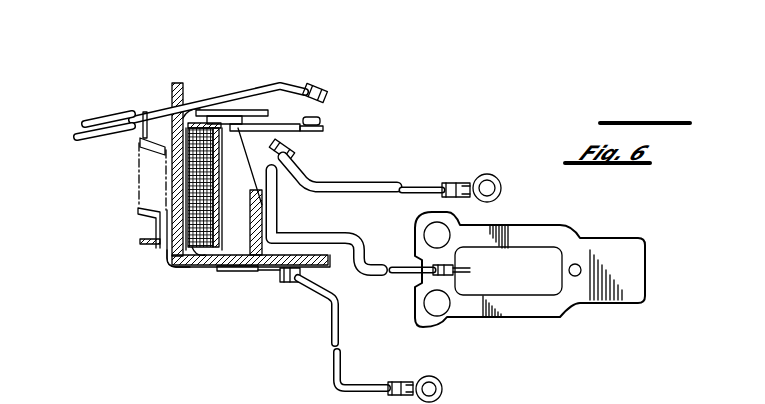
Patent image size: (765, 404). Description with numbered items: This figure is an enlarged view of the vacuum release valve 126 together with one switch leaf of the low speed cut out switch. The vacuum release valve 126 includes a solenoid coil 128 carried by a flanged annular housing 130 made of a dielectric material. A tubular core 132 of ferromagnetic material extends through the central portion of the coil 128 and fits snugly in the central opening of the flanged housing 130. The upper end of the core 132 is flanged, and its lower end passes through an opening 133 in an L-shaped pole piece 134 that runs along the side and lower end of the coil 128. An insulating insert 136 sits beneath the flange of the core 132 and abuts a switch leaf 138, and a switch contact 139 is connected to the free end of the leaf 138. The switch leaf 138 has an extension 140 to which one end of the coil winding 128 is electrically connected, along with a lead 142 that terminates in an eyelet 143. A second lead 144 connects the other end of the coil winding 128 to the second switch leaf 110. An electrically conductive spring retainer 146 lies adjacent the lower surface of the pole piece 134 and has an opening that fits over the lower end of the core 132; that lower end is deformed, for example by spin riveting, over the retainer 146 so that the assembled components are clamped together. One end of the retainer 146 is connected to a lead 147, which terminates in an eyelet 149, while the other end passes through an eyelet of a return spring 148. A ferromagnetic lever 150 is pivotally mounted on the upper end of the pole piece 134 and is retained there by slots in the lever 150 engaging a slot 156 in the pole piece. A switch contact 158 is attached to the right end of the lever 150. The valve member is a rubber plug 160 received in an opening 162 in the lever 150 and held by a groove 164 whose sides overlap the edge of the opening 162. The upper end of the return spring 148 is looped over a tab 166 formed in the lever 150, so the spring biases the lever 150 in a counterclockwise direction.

The second switch leaf 110 is at (541, 224).
The vacuum release valve 126 is at (192, 306).
The solenoid coil 128 is at (197, 245).
The flanged annular housing 130 is at (233, 270).
The tubular core 132 is at (262, 123).
The opening 133 is at (240, 273).
The L-shaped pole piece 134 is at (172, 252).
The insulating insert 136 is at (204, 109).
The switch leaf 138 is at (318, 118).
The switch contact 139 is at (323, 129).
The extension 140 is at (270, 146).
The lead 142 is at (375, 184).
The eyelet 143 is at (488, 174).
The lead 144 is at (360, 240).
The spring retainer 146 is at (168, 265).
The lead 147 is at (338, 318).
The return spring 148 is at (138, 210).
The eyelet 149 is at (432, 376).
The lever 150 is at (243, 86).
The slot 156 is at (186, 106).
The switch contact 158 is at (328, 93).
The rubber plug 160 is at (105, 120).
The opening 162 is at (106, 142).
The groove 164 is at (141, 112).
The tab 166 is at (162, 104).